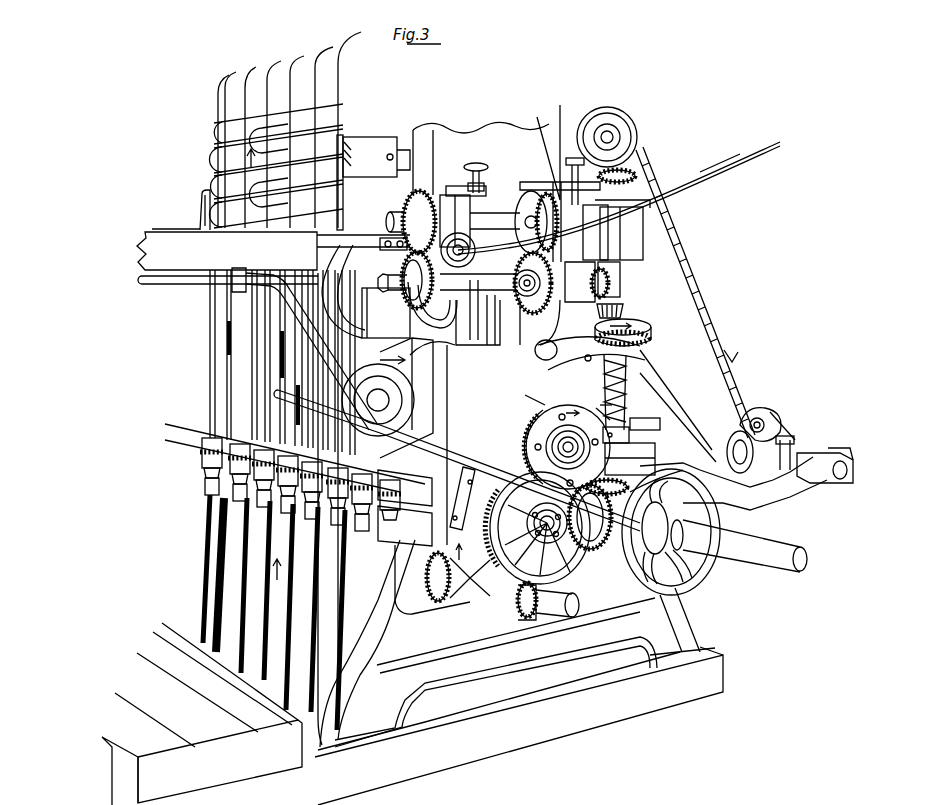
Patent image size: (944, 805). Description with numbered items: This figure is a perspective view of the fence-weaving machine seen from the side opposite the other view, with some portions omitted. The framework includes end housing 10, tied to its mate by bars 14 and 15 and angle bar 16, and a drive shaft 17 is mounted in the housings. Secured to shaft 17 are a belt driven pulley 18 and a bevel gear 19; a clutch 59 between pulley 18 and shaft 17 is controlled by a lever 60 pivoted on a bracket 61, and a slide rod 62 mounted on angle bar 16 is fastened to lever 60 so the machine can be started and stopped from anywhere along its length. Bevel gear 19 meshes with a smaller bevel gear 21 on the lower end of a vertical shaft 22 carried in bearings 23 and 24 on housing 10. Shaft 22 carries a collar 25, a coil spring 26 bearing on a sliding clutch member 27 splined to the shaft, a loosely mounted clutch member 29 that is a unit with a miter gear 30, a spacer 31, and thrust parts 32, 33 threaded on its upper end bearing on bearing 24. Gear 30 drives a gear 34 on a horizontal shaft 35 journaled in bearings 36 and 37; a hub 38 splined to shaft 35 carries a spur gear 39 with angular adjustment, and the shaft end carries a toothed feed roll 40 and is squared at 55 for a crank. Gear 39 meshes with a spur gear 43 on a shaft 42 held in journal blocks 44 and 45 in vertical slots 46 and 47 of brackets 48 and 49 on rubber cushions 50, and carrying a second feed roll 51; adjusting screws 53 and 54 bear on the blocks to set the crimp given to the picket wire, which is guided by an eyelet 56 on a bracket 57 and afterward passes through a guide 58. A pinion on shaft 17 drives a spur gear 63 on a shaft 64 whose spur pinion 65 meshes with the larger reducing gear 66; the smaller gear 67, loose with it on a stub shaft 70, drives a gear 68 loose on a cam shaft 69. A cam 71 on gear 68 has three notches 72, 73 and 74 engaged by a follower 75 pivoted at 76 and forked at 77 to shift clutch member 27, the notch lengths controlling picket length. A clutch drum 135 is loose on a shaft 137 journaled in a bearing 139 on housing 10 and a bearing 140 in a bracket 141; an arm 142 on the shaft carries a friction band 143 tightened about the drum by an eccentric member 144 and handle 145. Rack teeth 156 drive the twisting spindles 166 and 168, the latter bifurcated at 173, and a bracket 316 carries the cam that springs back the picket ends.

The end housing 10 is at (700, 640).
The bar 14 is at (405, 488).
The bar 15 is at (405, 526).
The angle bar 16 is at (150, 240).
The drive shaft 17 is at (790, 555).
The belt driven pulley 18 is at (706, 578).
The bevel gear 19 is at (560, 535).
The smaller bevel gear 21 is at (584, 450).
The vertical shaft 22 is at (628, 428).
The bearing 23 is at (640, 455).
The bearing 24 is at (625, 245).
The collar 25 is at (652, 418).
The coil spring 26 is at (606, 395).
The sliding clutch member 27 is at (648, 337).
The loosely mounted clutch member 29 is at (650, 325).
The miter gear 30 is at (625, 310).
The spacer 31 is at (622, 282).
The lever 32 is at (668, 222).
The lever arm 33 is at (690, 200).
The gear 34 is at (598, 300).
The horizontal shaft 35 is at (485, 300).
The bearing 36 is at (586, 282).
The bearing 37 is at (472, 335).
The hub 38 is at (520, 305).
The spur gear 39 is at (512, 315).
The feed roll 40 is at (412, 306).
The shaft 42 is at (503, 212).
The spur gear 43 is at (528, 195).
The journal block 44 is at (466, 186).
The journal block 45 is at (560, 158).
The vertical slot 46 is at (455, 195).
The vertical slot 47 is at (547, 165).
The bracket 48 is at (428, 150).
The bracket 49 is at (608, 210).
The rubber cushions 50 is at (462, 240).
The feed roll 51 is at (406, 208).
The adjusting screw 53 is at (476, 162).
The adjusting screw 54 is at (600, 115).
The squared end 55 is at (392, 290).
The eyelet 56 is at (472, 312).
The bracket 57 is at (447, 356).
The guide 58 is at (390, 238).
The clutch 59 is at (707, 505).
The lever 60 is at (490, 455).
The bracket 61 is at (467, 466).
The slide rod 62 is at (180, 284).
The spur gear 63 is at (446, 600).
The shaft 64 is at (566, 606).
The spur pinion 65 is at (524, 618).
The larger reducing gear 66 is at (492, 565).
The smaller reducing gear 67 is at (520, 560).
The gear 68 is at (525, 410).
The cam shaft 69 is at (560, 452).
The stub shaft 70 is at (585, 545).
The cam 71 is at (596, 397).
The notch 72 is at (600, 484).
The notch 73 is at (558, 443).
The notch 74 is at (606, 408).
The follower 75 is at (538, 408).
The pivot 76 is at (592, 346).
The fork 77 is at (655, 353).
The clutch drum 135 is at (790, 436).
The shaft 137 is at (844, 439).
The bearing 139 is at (742, 420).
The bearing 140 is at (827, 458).
The bracket 141 is at (780, 492).
The arm 142 is at (764, 420).
The friction band 143 is at (792, 450).
The eccentric member 144 is at (770, 410).
The handle 145 is at (798, 420).
The rack teeth 156 is at (200, 470).
The twisting spindles 166 is at (245, 430).
The twisting spindles 168 is at (310, 360).
The bifurcation 173 is at (388, 436).
The bracket 316 is at (200, 193).